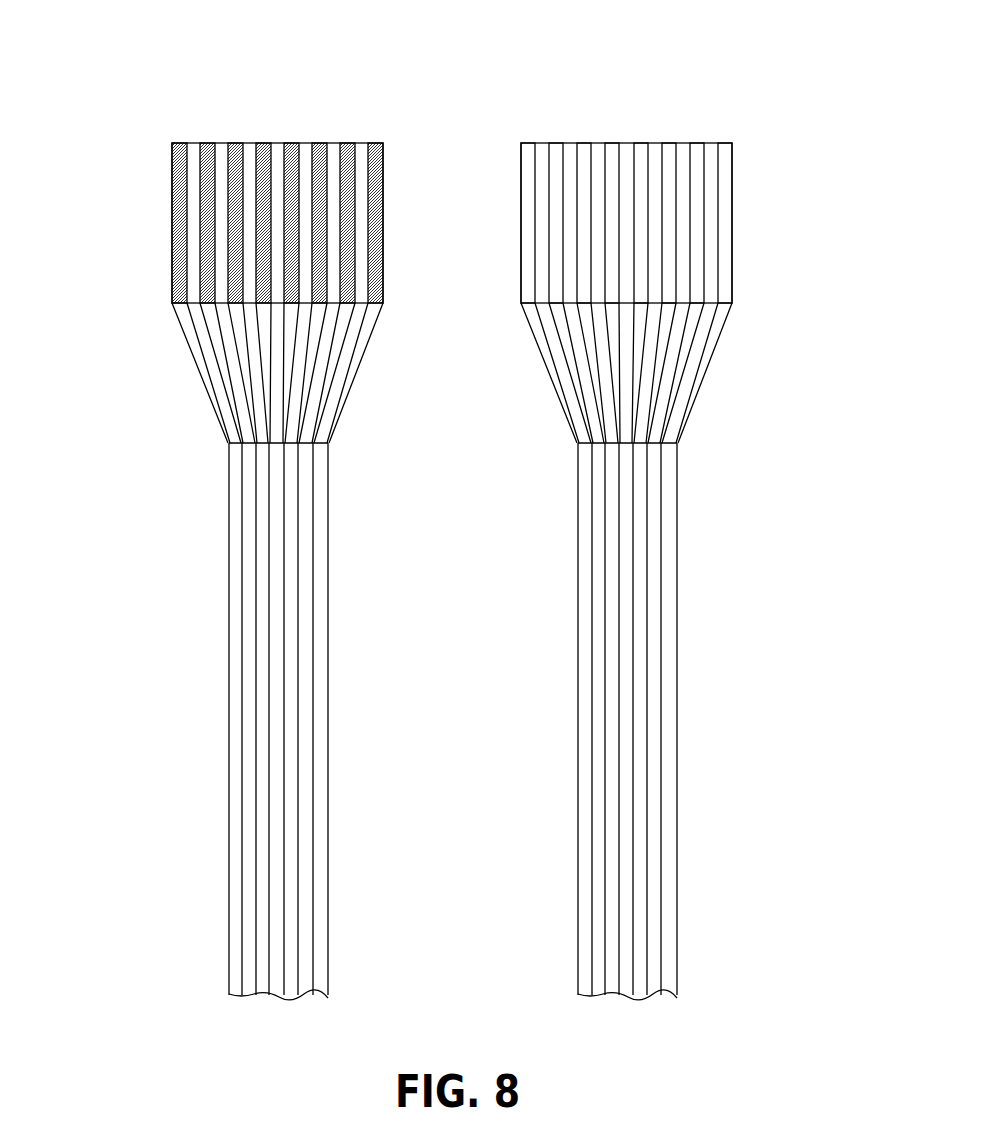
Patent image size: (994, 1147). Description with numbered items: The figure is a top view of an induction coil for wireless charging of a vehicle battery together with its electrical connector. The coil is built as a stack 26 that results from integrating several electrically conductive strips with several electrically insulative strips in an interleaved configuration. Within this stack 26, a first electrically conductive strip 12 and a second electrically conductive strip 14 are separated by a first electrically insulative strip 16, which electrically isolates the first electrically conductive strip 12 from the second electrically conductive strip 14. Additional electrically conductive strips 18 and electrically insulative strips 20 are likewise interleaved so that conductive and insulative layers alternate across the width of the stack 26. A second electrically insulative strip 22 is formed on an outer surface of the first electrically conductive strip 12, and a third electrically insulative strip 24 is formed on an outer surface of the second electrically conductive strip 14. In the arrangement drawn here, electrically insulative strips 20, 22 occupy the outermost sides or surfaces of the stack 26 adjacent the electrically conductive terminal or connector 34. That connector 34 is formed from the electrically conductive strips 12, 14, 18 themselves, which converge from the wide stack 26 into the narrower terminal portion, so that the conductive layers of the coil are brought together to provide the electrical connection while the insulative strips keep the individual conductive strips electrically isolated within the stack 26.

The first electrically conductive strip 12 is at (192, 142).
The second electrically conductive strip 14 is at (222, 142).
The first electrically insulative strip 16 is at (693, 142).
The additional electrically conductive strips 18 is at (250, 142).
The electrically insulative strips 20 is at (375, 142).
The second electrically insulative strip 22 is at (178, 218).
The third electrically insulative strip 24 is at (665, 142).
The stack 26 is at (110, 121).
The electrically conductive terminal or connector 34 is at (208, 692).